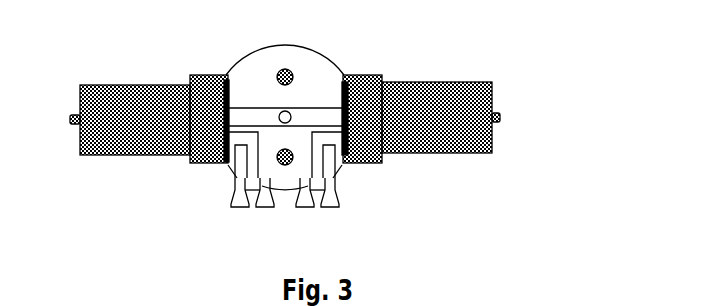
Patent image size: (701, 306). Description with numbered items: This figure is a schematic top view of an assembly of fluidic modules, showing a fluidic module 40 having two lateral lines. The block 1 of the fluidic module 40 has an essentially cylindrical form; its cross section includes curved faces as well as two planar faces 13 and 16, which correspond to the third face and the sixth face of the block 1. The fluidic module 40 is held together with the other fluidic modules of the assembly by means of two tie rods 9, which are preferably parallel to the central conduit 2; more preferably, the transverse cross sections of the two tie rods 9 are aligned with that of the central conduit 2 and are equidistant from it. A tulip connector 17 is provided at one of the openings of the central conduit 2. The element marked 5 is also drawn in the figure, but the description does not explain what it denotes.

The block 1 is at (240, 62).
The central conduit 2 is at (289, 110).
The right leg / fastening clip 5 is at (320, 200).
The tie rods 9 is at (281, 69).
The third face 13 is at (218, 77).
The sixth face 16 is at (353, 73).
The tulip connector 17 is at (230, 198).
The fluidic module 40 is at (527, 123).